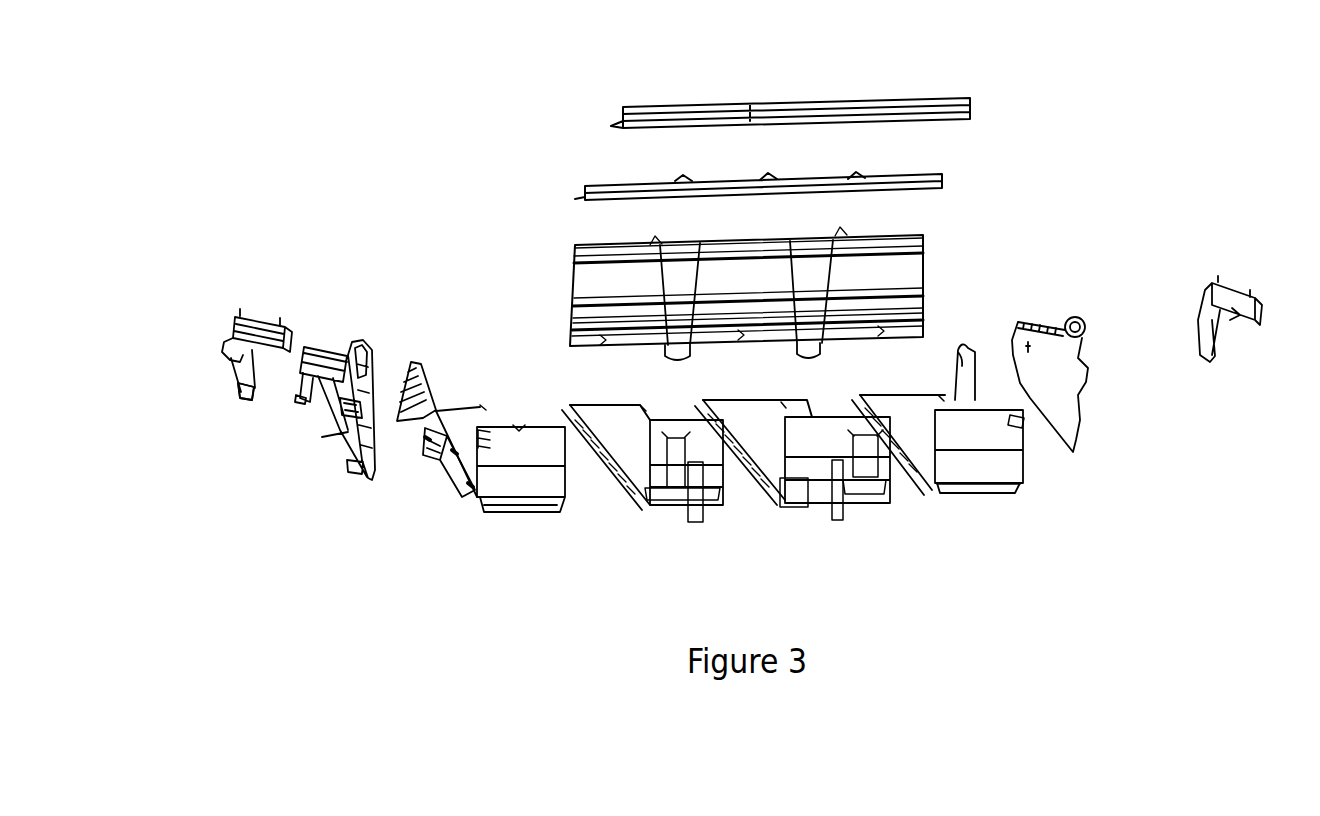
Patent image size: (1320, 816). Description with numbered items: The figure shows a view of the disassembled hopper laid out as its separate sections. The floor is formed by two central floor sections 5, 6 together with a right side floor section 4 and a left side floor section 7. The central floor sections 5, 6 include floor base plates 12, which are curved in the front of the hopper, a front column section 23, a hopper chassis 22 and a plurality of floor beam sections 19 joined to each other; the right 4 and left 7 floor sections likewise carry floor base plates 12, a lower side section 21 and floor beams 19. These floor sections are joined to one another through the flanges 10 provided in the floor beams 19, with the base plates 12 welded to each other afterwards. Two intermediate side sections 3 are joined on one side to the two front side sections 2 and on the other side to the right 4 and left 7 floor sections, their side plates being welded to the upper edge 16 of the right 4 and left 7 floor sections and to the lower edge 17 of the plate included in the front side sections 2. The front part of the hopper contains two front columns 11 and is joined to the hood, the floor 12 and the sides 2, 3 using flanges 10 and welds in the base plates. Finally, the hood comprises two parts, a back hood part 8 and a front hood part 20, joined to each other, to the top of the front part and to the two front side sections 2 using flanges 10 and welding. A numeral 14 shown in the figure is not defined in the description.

The front side section 2 is at (245, 325).
The intermediate side section 3 is at (313, 340).
The right side floor section 4 is at (520, 478).
The central floor section 5 is at (646, 497).
The central floor section 6 is at (825, 465).
The left side floor section 7 is at (960, 478).
The hood 8 is at (945, 184).
The flange 10 is at (680, 182).
The front column 11 is at (678, 290).
The floor base plate 12 is at (438, 410).
The base plate 14 is at (665, 500).
The upper edge 16 is at (446, 468).
The lower edge 17 is at (238, 392).
The floor beam 19 is at (606, 470).
The front part of the hood 20 is at (895, 112).
The lower side section 21 is at (405, 430).
The hopper chassis 22 is at (702, 522).
The front column section 23 is at (680, 490).